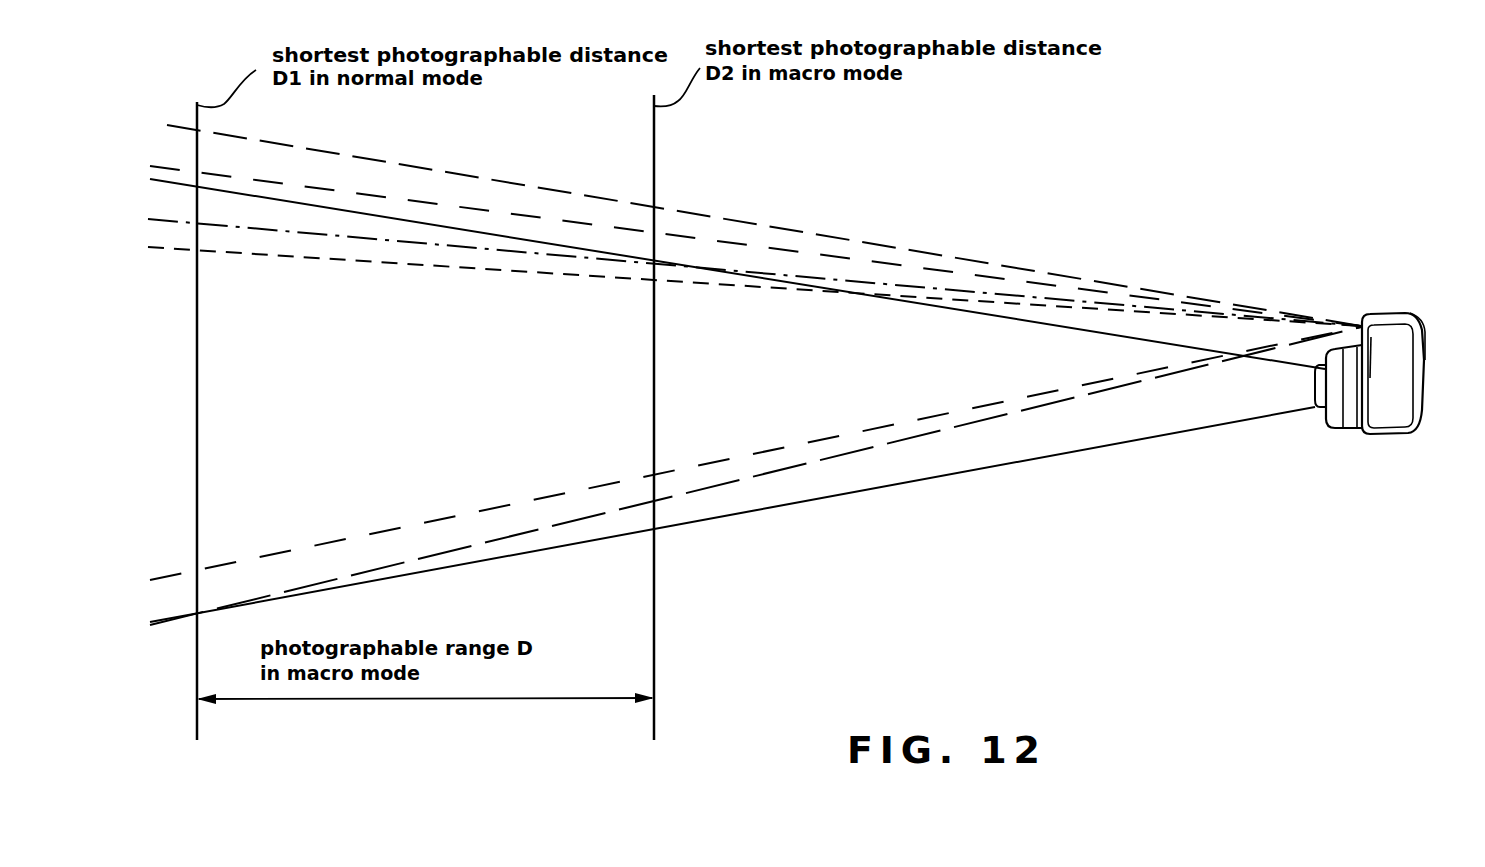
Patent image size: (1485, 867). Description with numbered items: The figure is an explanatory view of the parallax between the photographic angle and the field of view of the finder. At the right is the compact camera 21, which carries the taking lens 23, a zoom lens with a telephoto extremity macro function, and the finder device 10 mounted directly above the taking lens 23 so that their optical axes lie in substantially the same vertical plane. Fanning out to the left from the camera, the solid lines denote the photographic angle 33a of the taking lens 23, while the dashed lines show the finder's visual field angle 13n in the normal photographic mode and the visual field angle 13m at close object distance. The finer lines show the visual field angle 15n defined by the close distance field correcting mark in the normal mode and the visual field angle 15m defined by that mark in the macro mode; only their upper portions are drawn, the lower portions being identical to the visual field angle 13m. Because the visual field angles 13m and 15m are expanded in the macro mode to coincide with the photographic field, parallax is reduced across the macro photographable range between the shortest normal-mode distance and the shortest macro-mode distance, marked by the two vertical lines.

The finder device 10 is at (1362, 318).
The compact camera 21 is at (1382, 434).
The taking lens 23 is at (1315, 409).
The photographic angle 33a is at (1157, 344).
The visual field angle at close object distance in normal photographic mode 13m is at (679, 208).
The visual field angle in normal photographic mode 13n is at (737, 242).
The visual field angle defined by close distance field correcting mark in macro phot 15m is at (312, 235).
The visual field angle defined by close distance field correcting mark in normal pho 15n is at (256, 256).